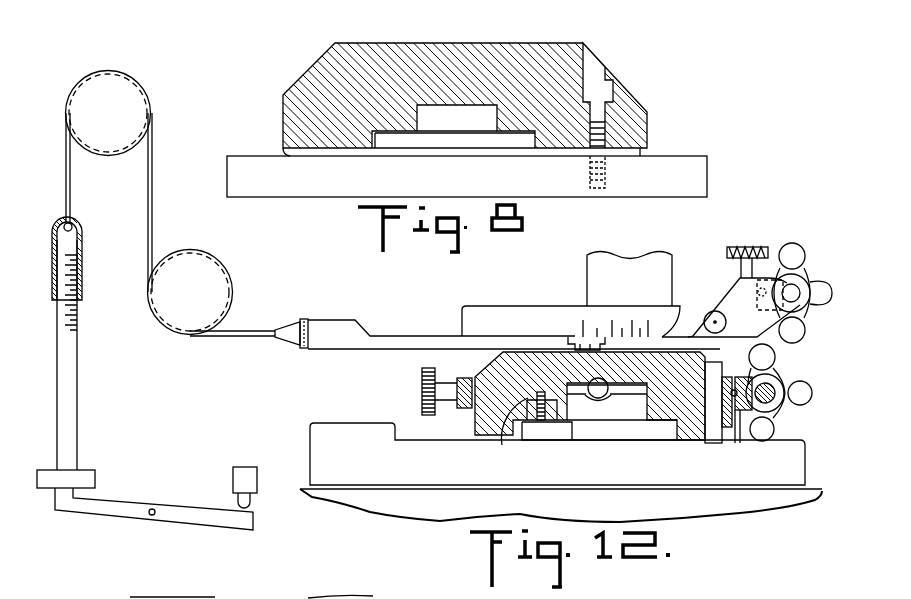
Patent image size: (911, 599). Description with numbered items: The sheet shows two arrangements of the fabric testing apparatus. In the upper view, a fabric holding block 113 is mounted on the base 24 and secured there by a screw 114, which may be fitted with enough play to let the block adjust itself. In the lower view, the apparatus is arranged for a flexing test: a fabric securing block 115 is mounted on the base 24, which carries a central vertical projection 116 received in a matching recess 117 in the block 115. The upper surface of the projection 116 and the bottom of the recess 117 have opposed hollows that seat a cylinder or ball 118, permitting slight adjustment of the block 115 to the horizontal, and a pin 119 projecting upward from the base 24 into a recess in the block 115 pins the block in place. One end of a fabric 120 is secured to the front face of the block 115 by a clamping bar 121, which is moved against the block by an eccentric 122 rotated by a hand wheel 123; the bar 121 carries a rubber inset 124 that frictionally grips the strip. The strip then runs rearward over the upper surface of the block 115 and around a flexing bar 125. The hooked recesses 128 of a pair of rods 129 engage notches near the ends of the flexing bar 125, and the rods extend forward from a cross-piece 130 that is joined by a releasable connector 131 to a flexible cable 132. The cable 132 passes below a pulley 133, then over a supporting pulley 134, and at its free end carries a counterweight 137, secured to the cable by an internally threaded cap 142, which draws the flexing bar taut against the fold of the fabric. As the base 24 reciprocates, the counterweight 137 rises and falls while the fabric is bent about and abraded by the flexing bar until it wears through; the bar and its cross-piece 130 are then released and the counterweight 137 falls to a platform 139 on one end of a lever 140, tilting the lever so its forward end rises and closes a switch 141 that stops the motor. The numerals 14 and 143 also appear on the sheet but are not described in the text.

In FIG. 8, the fabric holding block 113 is at (543, 48).
In FIG. 8, the screw 114 is at (597, 117).
In FIG. 8, the base 24 is at (690, 165).
In FIG. 12, the base 24 is at (322, 465).
In FIG. 12, the supporting pulley 134 is at (140, 112).
In FIG. 12, the pulley 133 is at (215, 275).
In FIG. 12, the flexible cable 132 is at (72, 185).
In FIG. 12, the internally threaded cap 142 is at (82, 248).
In FIG. 12, the counterweight 137 is at (70, 362).
In FIG. 12, the platform 139 is at (80, 478).
In FIG. 12, the lever 140 is at (100, 505).
In FIG. 12, the switch 141 is at (237, 475).
In FIG. 12, the releasable connector 131 is at (295, 325).
In FIG. 12, the cross-piece 130 is at (305, 323).
In FIG. 12, the rods 129 is at (372, 350).
In FIG. 12, the hooked recesses 128 is at (565, 345).
In FIG. 12, the flexing bar 125 is at (594, 347).
In FIG. 12, the fabric 120 is at (665, 335).
In FIG. 12, the clamping bar 121 is at (738, 378).
In FIG. 12, the hand wheel 123 is at (798, 392).
In FIG. 12, the eccentric 122 is at (773, 394).
In FIG. 12, the rubber inset 124 is at (740, 442).
In FIG. 12, the fabric securing block 115 is at (697, 440).
In FIG. 12, the pin 119 is at (500, 422).
In FIG. 12, the recess 117 is at (575, 422).
In FIG. 12, the cylinder or ball 118 is at (598, 400).
In FIG. 12, the central vertical projection 116 is at (630, 422).
In FIG. 12, the section line 14 is at (370, 595).
In FIG. 12, the member 143 is at (293, 594).